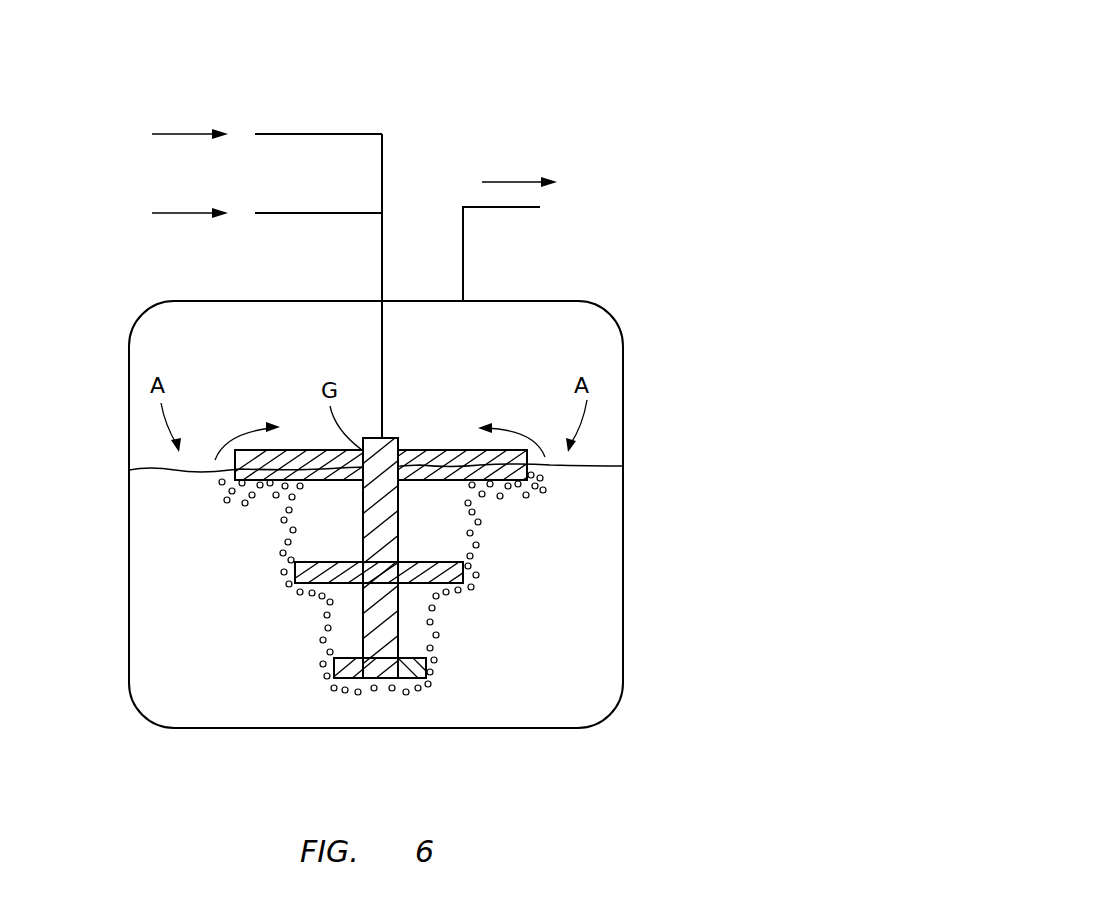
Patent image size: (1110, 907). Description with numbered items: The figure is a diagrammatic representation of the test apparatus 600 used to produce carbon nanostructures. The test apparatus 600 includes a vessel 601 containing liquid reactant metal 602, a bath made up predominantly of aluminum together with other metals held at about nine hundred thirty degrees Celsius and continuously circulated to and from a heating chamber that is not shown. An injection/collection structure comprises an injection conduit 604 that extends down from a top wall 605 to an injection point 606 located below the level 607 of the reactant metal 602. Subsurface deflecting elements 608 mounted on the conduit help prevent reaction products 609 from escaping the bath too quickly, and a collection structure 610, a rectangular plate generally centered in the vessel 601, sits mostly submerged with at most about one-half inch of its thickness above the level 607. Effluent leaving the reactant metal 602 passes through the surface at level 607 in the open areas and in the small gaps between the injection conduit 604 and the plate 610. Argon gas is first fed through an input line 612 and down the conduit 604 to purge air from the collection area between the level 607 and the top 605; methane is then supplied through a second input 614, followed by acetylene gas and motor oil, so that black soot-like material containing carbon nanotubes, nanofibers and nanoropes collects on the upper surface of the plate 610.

The test apparatus 600 is at (703, 55).
The vessel 601 is at (623, 585).
The liquid reactant metal 602 is at (580, 686).
The injection conduit 604 is at (383, 357).
The top wall 605 is at (235, 300).
The injection point 606 is at (356, 706).
The level of reactant metal 607 is at (603, 463).
The subsurface deflecting elements 608 is at (312, 583).
The reaction products 609 is at (248, 510).
The collection structure 610 is at (415, 450).
The input line 612 is at (283, 133).
The input 614 is at (283, 212).